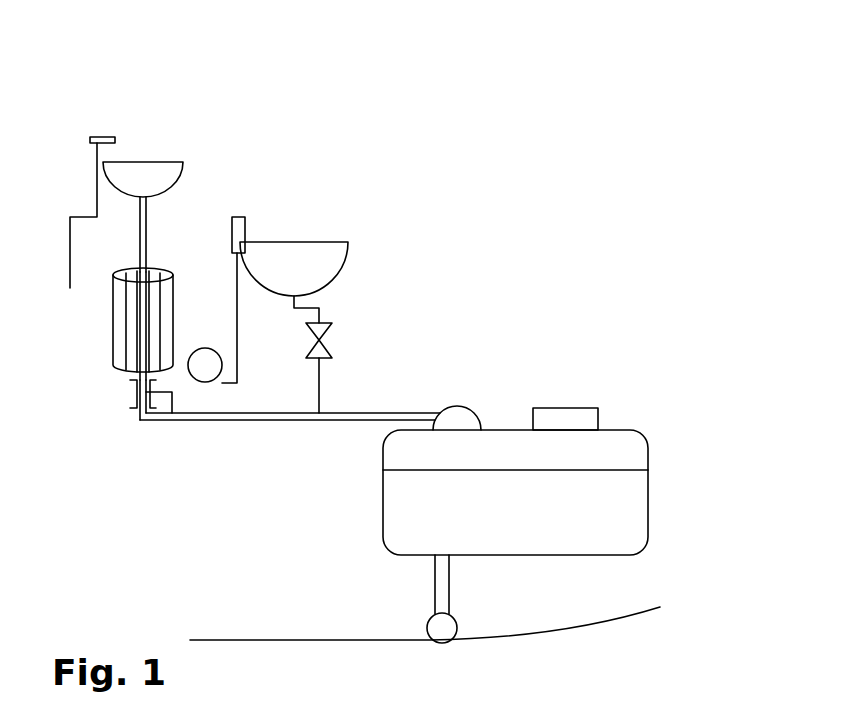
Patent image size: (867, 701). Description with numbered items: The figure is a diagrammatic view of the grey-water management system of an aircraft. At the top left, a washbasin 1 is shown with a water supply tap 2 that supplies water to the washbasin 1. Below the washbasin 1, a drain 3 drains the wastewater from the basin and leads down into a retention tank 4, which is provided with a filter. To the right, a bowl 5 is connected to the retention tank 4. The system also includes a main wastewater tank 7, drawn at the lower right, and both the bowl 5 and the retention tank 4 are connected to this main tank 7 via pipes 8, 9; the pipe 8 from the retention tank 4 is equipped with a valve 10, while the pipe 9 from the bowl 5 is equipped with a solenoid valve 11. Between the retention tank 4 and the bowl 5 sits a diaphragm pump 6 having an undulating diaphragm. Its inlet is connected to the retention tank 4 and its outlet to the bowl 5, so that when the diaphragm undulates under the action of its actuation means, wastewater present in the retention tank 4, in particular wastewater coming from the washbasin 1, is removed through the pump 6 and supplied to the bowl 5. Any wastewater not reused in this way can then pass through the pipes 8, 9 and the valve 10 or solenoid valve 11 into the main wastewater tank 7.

The washbasin 1 is at (163, 162).
The water supply tap 2 is at (108, 137).
The drain 3 is at (146, 212).
The retention tank 4 is at (113, 312).
The bowl 5 is at (325, 242).
The diaphragm pump 6 is at (207, 382).
The main wastewater tank 7 is at (648, 500).
The pipe 8 is at (238, 420).
The pipe 9 is at (320, 388).
The valve 10 is at (135, 390).
The solenoid valve 11 is at (333, 330).